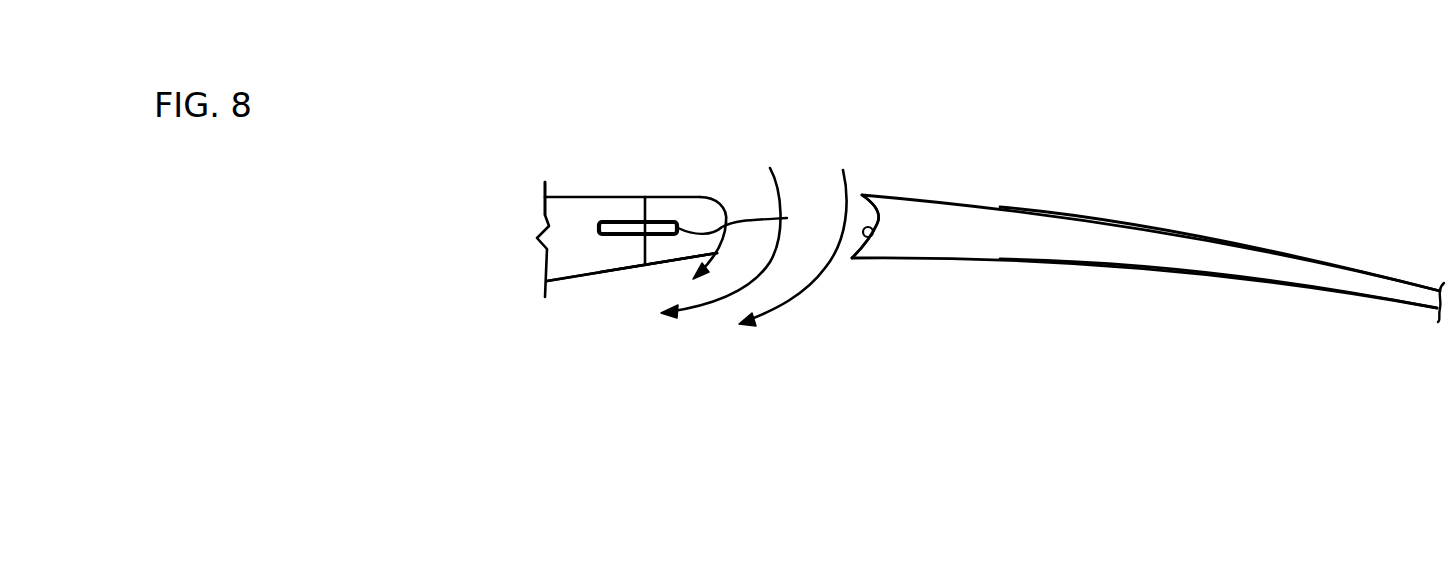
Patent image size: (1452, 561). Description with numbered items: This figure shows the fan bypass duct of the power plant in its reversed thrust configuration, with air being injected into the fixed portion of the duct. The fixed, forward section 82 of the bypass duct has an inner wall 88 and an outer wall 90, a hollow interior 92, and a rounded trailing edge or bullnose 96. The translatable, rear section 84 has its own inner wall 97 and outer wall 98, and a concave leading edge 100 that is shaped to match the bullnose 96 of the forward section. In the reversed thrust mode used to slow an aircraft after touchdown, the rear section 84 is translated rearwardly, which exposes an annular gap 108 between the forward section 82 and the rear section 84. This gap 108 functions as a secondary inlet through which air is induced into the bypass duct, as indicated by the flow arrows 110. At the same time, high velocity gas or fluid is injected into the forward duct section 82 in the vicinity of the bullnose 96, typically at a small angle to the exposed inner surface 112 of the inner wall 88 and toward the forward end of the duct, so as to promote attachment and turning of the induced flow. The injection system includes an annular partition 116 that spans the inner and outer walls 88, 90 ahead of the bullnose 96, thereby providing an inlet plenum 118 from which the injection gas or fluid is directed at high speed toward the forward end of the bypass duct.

The fixed forward section of bypass duct 82 is at (577, 183).
The translatable rear section of bypass duct 84 is at (1131, 216).
The inner wall 88 is at (614, 268).
The outer wall 90 is at (695, 197).
The hollow interior 92 is at (559, 218).
The bullnose 96 is at (724, 220).
The inner wall 97 is at (1088, 268).
The outer wall 98 is at (1160, 233).
The concave leading edge 100 is at (874, 235).
The annular gap 108 is at (785, 273).
The flow arrows 110 is at (777, 183).
The exposed inner surface 112 is at (633, 268).
The annular partition 116 is at (644, 203).
The inlet plenum 118 is at (711, 221).